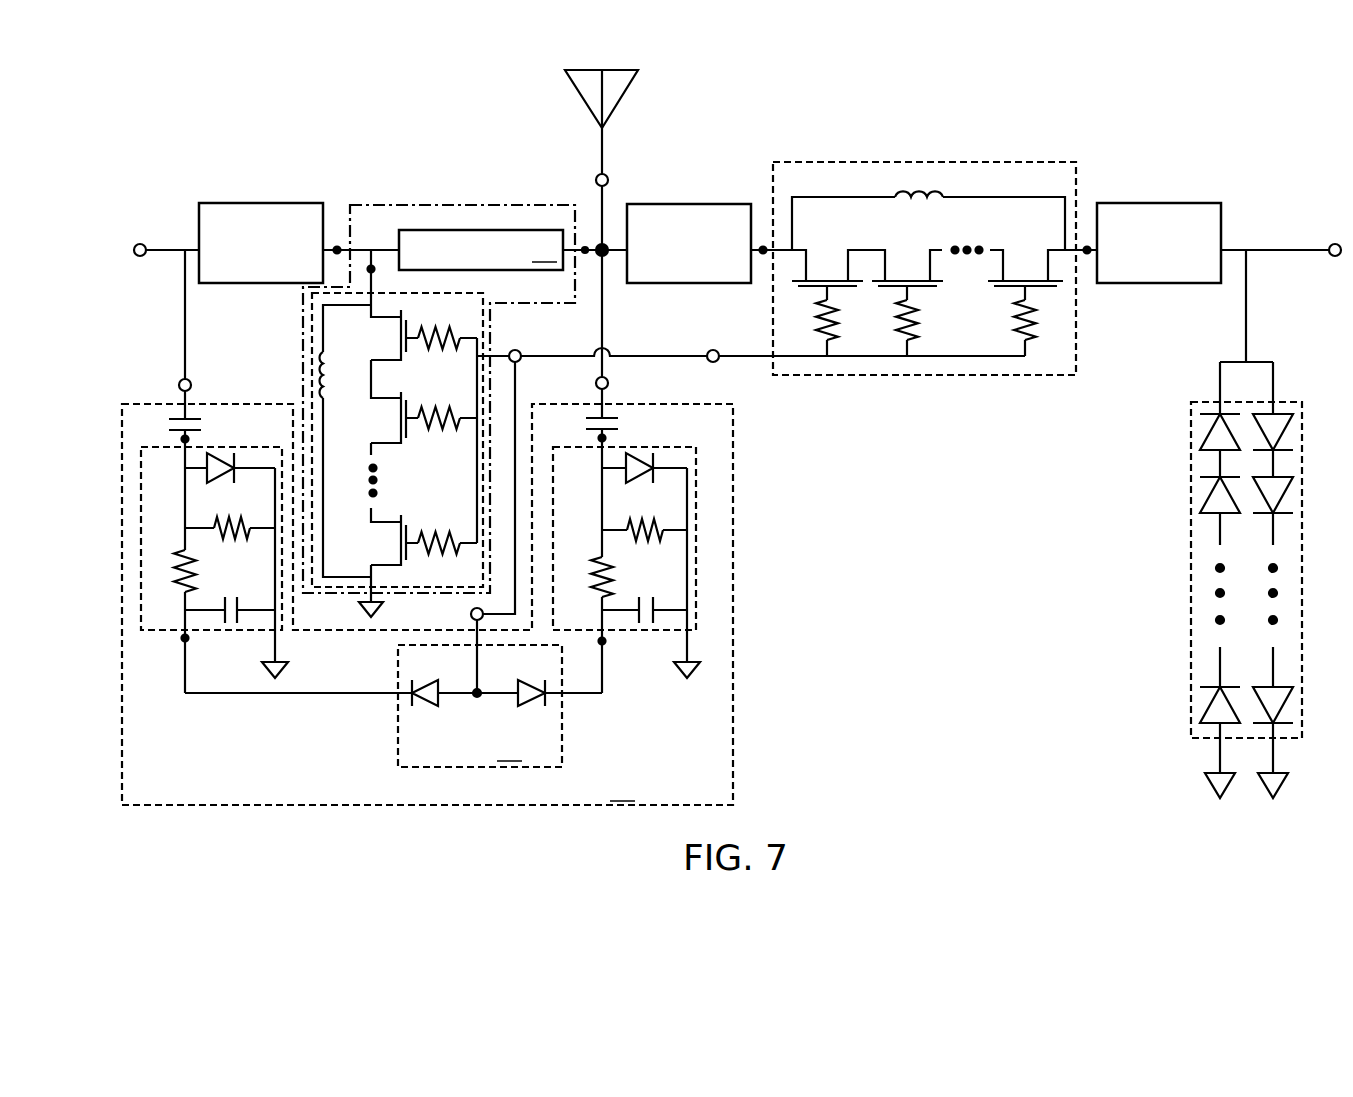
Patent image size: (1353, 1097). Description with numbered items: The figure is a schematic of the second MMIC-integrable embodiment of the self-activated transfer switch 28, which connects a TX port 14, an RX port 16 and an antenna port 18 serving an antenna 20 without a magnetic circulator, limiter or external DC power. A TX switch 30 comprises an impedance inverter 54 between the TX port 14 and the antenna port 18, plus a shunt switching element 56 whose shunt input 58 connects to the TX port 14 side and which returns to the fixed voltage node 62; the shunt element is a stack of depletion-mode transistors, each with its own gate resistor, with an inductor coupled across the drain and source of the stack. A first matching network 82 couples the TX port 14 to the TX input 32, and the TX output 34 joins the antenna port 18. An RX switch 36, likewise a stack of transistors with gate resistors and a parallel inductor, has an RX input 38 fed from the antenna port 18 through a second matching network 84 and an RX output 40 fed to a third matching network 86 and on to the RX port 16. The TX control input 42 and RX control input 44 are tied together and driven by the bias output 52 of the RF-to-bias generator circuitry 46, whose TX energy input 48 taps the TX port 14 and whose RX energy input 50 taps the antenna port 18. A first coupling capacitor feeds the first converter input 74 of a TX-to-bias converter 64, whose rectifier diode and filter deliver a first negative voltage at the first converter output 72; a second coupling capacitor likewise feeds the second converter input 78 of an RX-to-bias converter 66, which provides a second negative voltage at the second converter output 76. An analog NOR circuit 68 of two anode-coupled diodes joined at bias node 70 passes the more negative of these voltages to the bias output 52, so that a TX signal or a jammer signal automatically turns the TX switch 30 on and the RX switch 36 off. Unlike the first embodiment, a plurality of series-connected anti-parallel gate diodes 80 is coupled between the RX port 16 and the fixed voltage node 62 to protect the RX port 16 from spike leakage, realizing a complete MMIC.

The TX port 14 is at (136, 256).
The RX port 16 is at (1335, 243).
The antenna port 18 is at (605, 175).
The antenna 20 is at (601, 152).
The self-activated transfer switch 28 is at (452, 90).
The TX switch 30 is at (573, 301).
The TX input 32 is at (338, 246).
The TX output 34 is at (585, 254).
The RX switch 36 is at (1076, 162).
The RX input 38 is at (763, 246).
The RX output 40 is at (1088, 254).
The TX control input 42 is at (520, 361).
The RX control input 44 is at (718, 351).
The RF-to-bias generator circuitry 46 is at (427, 604).
The TX energy input 48 is at (190, 380).
The RX energy input 50 is at (608, 380).
The bias output 52 is at (470, 614).
The impedance inverter 54 is at (481, 250).
The shunt switching element 56 is at (484, 293).
The shunt input 58 is at (375, 270).
The fixed voltage node 62 is at (380, 614).
The TX-to-bias converter 64 is at (281, 448).
The RX-to-bias converter 66 is at (697, 448).
The analog NOR circuit 68 is at (480, 706).
The bias node 70 is at (478, 690).
The first converter output 72 is at (183, 640).
The first converter input 74 is at (190, 438).
The second converter output 76 is at (606, 641).
The second converter input 78 is at (607, 438).
The plurality of series-connected anti-parallel gate diodes 80 is at (1302, 402).
The first matching network 82 is at (262, 203).
The second matching network 84 is at (692, 204).
The third matching network 86 is at (1160, 203).